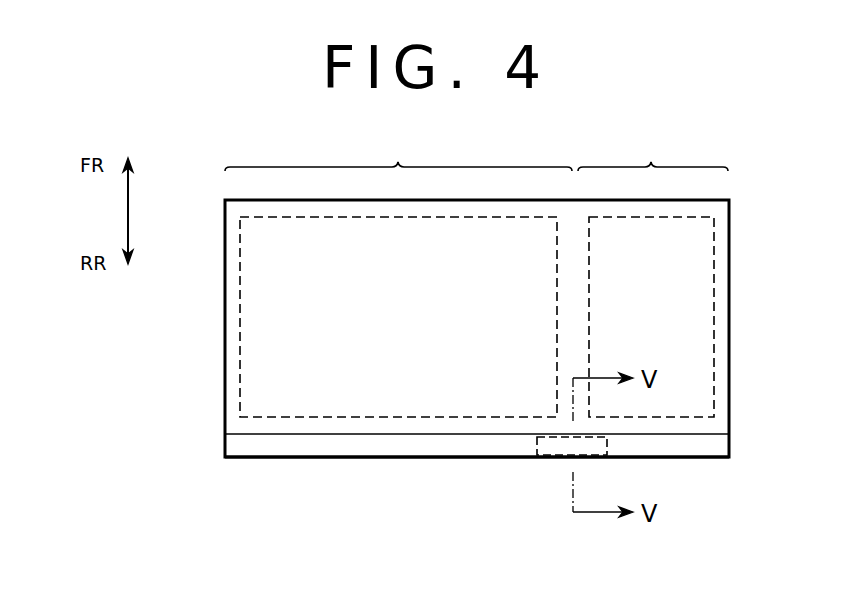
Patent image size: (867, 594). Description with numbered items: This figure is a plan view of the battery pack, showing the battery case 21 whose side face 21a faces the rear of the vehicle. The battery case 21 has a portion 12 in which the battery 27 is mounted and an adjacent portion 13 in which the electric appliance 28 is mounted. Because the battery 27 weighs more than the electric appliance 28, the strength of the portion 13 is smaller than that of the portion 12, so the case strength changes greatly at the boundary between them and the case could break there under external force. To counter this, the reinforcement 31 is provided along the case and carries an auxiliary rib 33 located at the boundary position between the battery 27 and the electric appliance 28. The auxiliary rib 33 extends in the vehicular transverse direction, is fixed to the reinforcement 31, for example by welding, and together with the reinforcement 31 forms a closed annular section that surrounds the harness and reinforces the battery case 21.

The portion 12 is at (398, 149).
The portion 13 is at (653, 149).
The battery case 21 is at (729, 243).
The side face 21a is at (411, 459).
The battery 27 is at (240, 322).
The electric appliance 28 is at (714, 290).
The reinforcement 31 is at (225, 445).
The auxiliary rib 33 is at (537, 443).